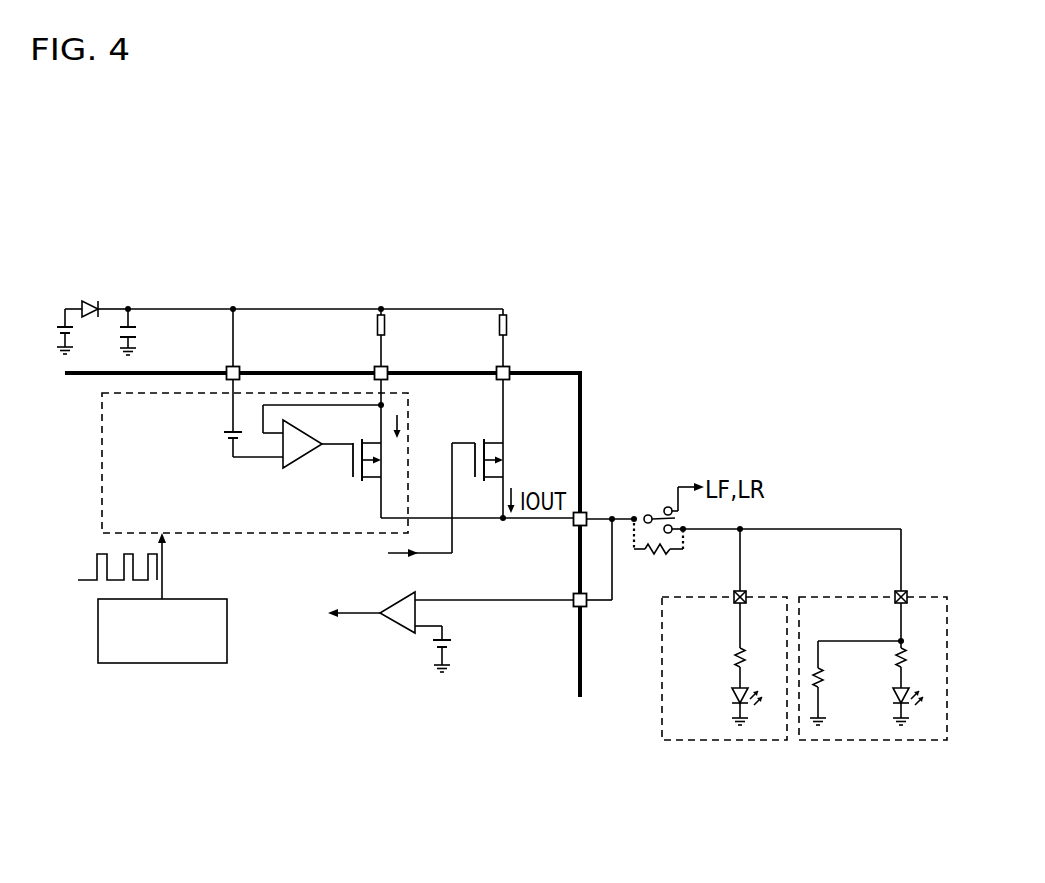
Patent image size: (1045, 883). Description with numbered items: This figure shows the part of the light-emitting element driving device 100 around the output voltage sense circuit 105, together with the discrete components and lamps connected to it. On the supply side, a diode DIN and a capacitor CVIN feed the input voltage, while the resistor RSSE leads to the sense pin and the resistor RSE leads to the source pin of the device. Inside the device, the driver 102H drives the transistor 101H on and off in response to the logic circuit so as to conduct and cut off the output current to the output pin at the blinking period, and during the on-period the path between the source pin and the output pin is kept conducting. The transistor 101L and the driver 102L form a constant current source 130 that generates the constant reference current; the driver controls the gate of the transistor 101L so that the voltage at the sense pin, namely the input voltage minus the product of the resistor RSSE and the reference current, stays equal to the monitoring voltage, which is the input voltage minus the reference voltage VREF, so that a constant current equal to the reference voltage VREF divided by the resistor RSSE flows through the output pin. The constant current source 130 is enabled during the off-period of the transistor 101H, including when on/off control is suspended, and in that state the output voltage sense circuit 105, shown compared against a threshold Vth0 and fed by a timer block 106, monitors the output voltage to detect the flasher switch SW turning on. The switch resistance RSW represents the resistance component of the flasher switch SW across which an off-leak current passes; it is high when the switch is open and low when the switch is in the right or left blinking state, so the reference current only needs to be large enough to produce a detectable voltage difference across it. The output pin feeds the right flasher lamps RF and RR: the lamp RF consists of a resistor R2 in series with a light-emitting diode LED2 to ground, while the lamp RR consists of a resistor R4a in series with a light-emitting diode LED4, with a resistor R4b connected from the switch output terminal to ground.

The light-emitting element driving device 100 is at (583, 409).
The constant current source 130 is at (252, 456).
The transistor 101L is at (352, 489).
The transistor 101H is at (506, 461).
The driver 102L is at (310, 459).
The driver 102H is at (406, 507).
The output voltage sense circuit 105 is at (433, 621).
The CR timer 106 is at (199, 599).
The diode DIN is at (93, 301).
The capacitor CVIN is at (136, 331).
The resistor RSSE is at (385, 325).
The resistor RSE is at (507, 325).
The reference voltage VREF is at (223, 418).
The threshold voltage source Vth0 is at (457, 649).
The flasher switch SW is at (655, 503).
The switch resistance RSW is at (661, 555).
The right flasher lamp RF is at (724, 651).
The right flasher lamp RR is at (873, 651).
The resistor R2 is at (735, 657).
The light-emitting diode LED2 is at (734, 697).
The resistor R4a is at (894, 657).
The resistor R4b is at (824, 680).
The light-emitting diode LED4 is at (890, 704).